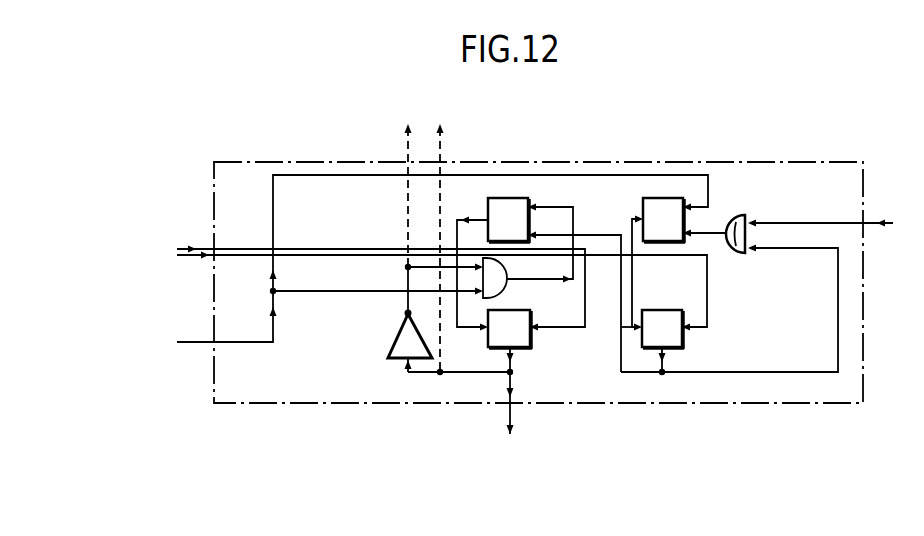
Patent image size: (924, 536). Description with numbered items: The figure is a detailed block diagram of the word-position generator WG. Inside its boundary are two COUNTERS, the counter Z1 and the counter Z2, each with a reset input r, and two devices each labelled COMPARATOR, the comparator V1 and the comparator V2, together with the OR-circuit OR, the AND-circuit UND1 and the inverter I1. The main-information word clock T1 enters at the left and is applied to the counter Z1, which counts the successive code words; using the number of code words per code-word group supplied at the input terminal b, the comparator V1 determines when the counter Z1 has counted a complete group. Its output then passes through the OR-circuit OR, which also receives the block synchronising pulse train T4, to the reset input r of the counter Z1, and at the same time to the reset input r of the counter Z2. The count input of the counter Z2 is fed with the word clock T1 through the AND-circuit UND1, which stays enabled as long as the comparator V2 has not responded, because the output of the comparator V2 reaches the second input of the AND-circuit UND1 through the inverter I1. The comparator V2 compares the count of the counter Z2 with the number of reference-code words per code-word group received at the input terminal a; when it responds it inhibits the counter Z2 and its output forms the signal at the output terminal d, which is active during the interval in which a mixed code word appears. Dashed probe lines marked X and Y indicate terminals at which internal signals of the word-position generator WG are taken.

The word-position generator WG is at (852, 160).
The terminal X is at (399, 195).
The terminal Y is at (448, 249).
The input terminal a is at (198, 246).
The input terminal b is at (207, 258).
The main-information word clock T1 is at (427, 263).
The inverter I1 is at (398, 347).
The AND-circuit UND1 is at (423, 253).
The counter Z2 is at (493, 264).
The counter Z1 is at (658, 264).
The comparator V2 is at (470, 372).
The comparator V1 is at (729, 310).
The OR-circuit OR is at (741, 214).
The block synchronising pulse train T4 is at (831, 224).
The reset input r is at (540, 235).
The output terminal d is at (531, 420).
The counters label COUNTERS is at (648, 198).
The comparator label COMPARATOR is at (524, 350).